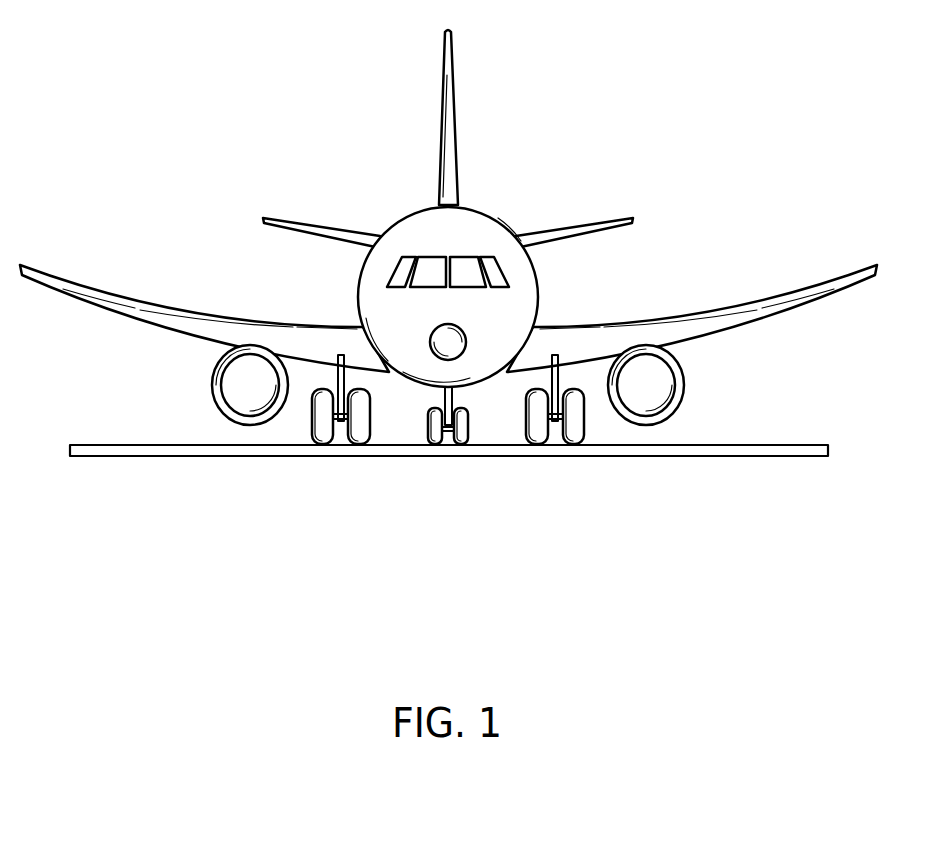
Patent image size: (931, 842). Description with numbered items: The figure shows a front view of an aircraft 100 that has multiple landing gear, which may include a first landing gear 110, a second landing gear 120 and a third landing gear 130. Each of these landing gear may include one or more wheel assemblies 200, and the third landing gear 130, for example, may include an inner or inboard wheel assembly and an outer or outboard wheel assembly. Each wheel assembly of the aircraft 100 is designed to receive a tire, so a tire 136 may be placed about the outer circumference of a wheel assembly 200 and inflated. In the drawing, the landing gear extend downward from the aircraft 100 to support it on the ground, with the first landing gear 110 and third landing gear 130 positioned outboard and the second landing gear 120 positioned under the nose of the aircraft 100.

The aircraft 100 is at (448, 282).
The first landing gear 110 is at (583, 428).
The second landing gear 120 is at (470, 432).
The third landing gear 130 is at (341, 450).
The tire 136 is at (369, 467).
The wheel assembly 200 is at (358, 446).